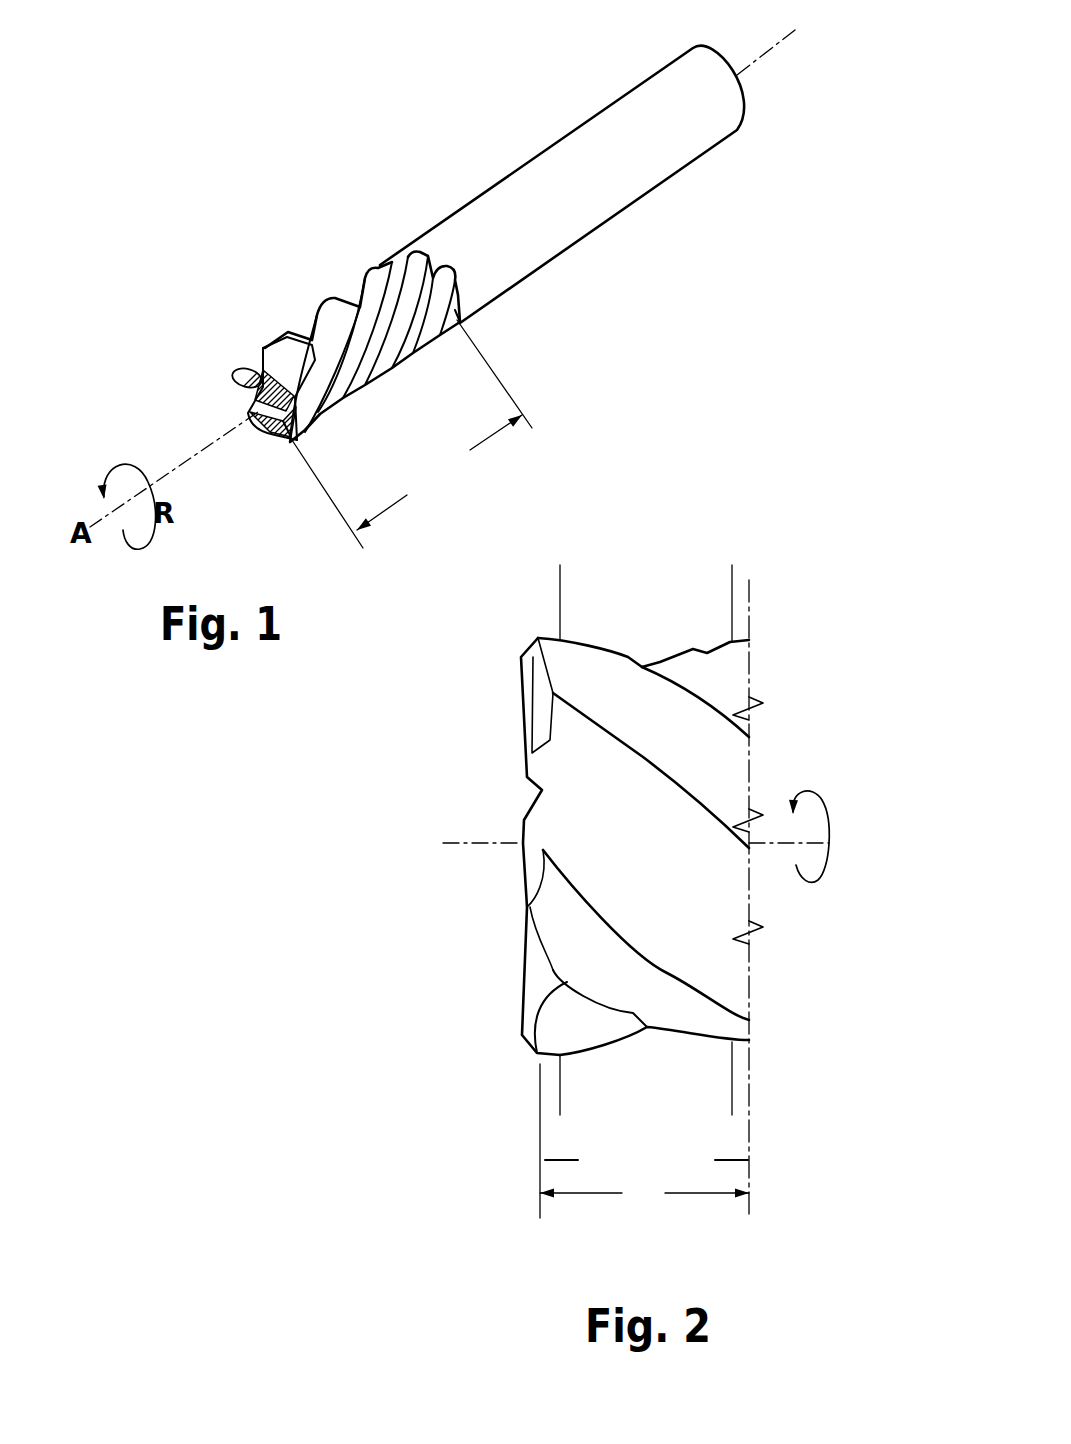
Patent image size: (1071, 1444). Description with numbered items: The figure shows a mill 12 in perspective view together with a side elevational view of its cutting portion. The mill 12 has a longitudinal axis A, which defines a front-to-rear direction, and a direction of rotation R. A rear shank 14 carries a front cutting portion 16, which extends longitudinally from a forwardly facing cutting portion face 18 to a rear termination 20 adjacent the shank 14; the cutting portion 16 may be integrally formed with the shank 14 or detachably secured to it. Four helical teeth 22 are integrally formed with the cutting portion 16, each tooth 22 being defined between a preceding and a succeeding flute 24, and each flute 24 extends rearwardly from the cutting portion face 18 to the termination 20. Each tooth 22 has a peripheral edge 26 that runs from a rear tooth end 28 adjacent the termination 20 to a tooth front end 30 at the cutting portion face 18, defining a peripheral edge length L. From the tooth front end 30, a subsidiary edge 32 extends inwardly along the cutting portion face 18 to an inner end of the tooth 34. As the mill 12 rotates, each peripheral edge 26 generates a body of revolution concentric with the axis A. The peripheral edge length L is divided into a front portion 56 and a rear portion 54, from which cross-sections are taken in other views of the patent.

In FIG. 1, the mill 12 is at (405, 78).
In FIG. 1, the shank 14 is at (580, 143).
In FIG. 1, the cutting portion 16 is at (303, 212).
In FIG. 2, the cutting portion 16 is at (785, 532).
In FIG. 1, the cutting portion face 18 is at (212, 420).
In FIG. 2, the cutting portion face 18 is at (484, 898).
In FIG. 1, the termination 20 is at (457, 322).
In FIG. 1, the helical tooth 22 is at (323, 317).
In FIG. 1, the flute 24 is at (302, 360).
In FIG. 1, the peripheral edge 26 is at (397, 277).
In FIG. 1, the rear tooth end 28 is at (437, 273).
In FIG. 1, the tooth front end 30 is at (291, 443).
In FIG. 1, the subsidiary edge 32 is at (268, 452).
In FIG. 1, the inner end of the tooth 34 is at (263, 402).
In FIG. 1, the rear portion 54 is at (500, 355).
In FIG. 2, the rear portion 54 is at (716, 553).
In FIG. 1, the front portion 56 is at (187, 277).
In FIG. 2, the front portion 56 is at (582, 553).